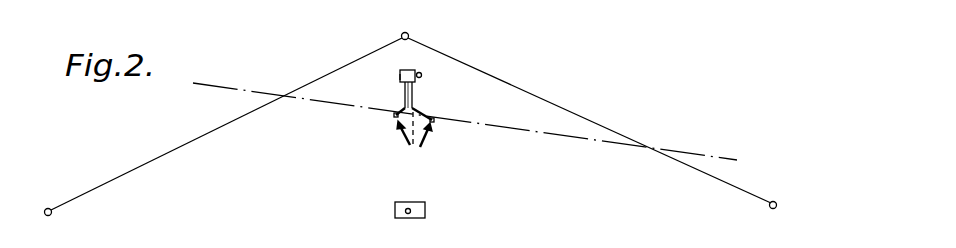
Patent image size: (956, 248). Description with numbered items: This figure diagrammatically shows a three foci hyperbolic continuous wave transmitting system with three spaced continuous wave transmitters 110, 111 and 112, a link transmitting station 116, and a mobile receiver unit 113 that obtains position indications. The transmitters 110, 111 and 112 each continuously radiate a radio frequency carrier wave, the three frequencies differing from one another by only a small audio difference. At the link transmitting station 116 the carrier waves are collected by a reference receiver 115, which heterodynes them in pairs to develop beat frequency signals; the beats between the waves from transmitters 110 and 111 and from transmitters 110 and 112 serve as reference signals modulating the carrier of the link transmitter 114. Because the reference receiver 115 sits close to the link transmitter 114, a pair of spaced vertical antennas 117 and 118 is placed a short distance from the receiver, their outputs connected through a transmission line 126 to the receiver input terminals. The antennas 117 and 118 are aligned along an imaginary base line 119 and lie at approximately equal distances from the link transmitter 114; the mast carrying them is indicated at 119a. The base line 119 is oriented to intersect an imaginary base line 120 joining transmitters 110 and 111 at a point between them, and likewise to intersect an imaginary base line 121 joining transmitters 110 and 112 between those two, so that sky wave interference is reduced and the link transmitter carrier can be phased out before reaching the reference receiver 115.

The continuous wave transmitter 110 is at (401, 35).
The continuous wave transmitter 111 is at (48, 208).
The continuous wave transmitter 112 is at (782, 189).
The mobile receiver unit 113 is at (395, 207).
The link transmitter 114 is at (421, 64).
The reference receiver 115 is at (400, 77).
The link transmitting station 116 is at (482, 58).
The vertical antenna 117 is at (395, 116).
The vertical antenna 118 is at (433, 122).
The imaginary base line 119 is at (431, 117).
The antenna mast 119a is at (413, 90).
The imaginary base line 120 is at (202, 137).
The imaginary base line 121 is at (590, 120).
The transmission line 126 is at (405, 97).